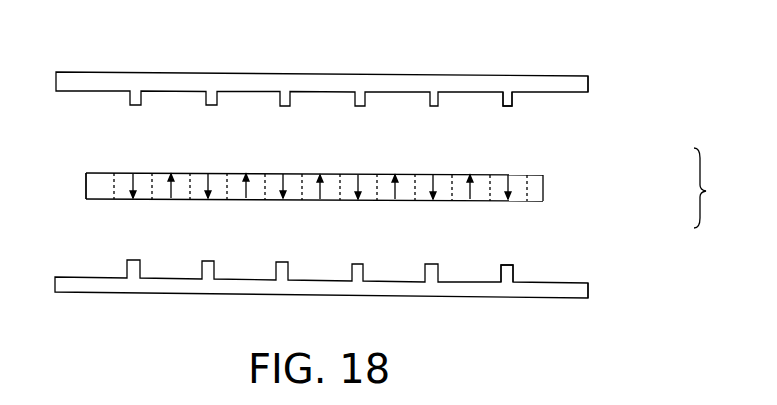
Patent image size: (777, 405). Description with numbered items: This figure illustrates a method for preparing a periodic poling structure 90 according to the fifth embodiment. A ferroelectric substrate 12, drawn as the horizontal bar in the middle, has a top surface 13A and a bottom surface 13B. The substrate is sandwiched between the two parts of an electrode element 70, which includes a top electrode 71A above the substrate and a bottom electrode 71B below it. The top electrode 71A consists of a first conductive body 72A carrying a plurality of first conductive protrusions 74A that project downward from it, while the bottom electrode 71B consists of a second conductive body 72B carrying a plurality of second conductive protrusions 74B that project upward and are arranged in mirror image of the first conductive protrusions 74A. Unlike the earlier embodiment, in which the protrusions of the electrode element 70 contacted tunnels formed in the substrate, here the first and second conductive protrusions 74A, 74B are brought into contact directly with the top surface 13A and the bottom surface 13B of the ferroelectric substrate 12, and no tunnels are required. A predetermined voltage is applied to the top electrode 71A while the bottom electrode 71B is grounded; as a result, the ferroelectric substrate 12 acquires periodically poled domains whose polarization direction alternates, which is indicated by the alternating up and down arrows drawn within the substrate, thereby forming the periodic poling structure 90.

The electrode element 70 is at (716, 188).
The top electrode 71A is at (588, 92).
The bottom electrode 71B is at (588, 292).
The first conductive body 72A is at (493, 72).
The second conductive body 72B is at (484, 288).
The first conductive protrusions 74A is at (512, 99).
The second conductive protrusions 74B is at (513, 273).
The ferroelectric substrate 12 is at (352, 190).
The top surface 13A is at (540, 175).
The bottom surface 13B is at (540, 201).
The periodic poling structure 90 is at (88, 205).